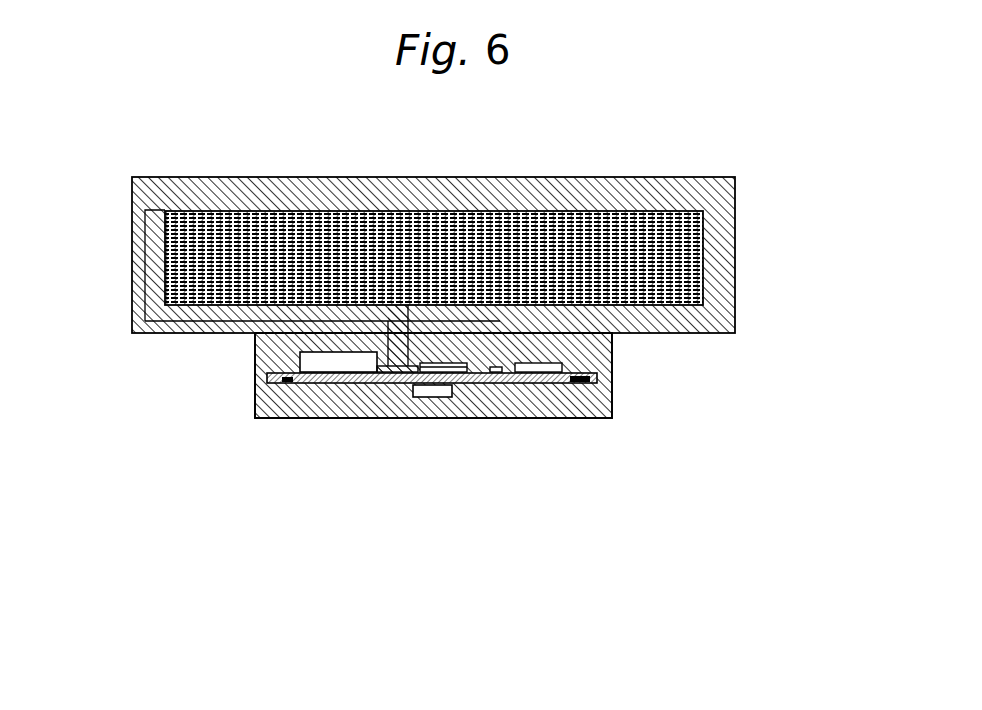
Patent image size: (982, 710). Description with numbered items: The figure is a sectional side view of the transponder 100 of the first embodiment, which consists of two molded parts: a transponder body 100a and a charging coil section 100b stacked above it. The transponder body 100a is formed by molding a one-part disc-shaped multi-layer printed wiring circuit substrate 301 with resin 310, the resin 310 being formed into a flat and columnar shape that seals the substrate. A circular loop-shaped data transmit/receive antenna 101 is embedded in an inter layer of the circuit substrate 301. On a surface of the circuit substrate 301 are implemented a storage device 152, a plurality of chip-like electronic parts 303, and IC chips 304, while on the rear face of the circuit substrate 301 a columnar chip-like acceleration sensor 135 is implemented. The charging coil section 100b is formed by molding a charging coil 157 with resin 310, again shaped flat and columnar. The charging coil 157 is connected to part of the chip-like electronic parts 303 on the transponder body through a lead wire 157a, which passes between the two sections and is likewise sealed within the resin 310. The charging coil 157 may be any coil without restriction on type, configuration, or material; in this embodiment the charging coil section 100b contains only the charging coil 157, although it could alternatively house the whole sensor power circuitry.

The transponder 100 is at (485, 577).
The transponder body 100a is at (283, 418).
The charging coil section 100b is at (332, 178).
The data transmit/receive antenna 101 is at (283, 377).
The acceleration sensor 135 is at (442, 392).
The storage device 152 is at (337, 365).
The charging coil 157 is at (700, 262).
The lead wire 157a is at (408, 306).
The circuit substrate 301 is at (263, 378).
The chip-like electronic parts 303 is at (493, 383).
The IC chips 304 is at (552, 383).
The resin 310 is at (675, 333).